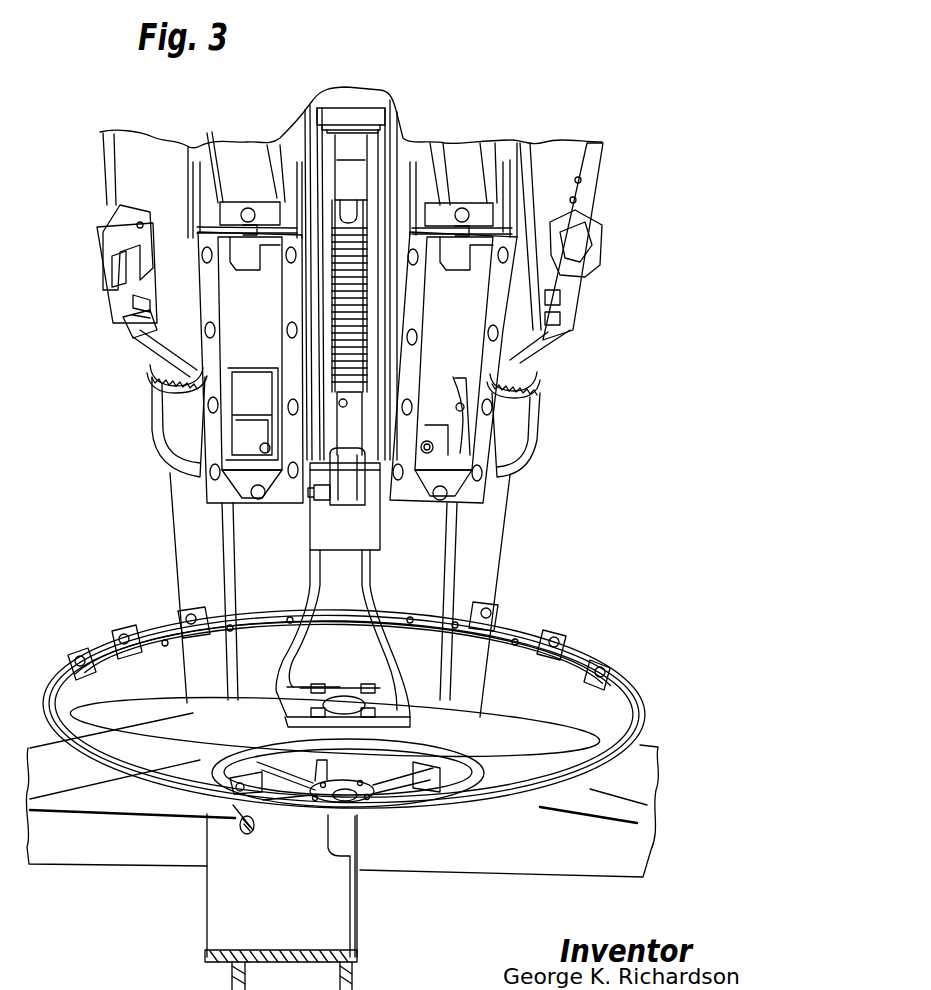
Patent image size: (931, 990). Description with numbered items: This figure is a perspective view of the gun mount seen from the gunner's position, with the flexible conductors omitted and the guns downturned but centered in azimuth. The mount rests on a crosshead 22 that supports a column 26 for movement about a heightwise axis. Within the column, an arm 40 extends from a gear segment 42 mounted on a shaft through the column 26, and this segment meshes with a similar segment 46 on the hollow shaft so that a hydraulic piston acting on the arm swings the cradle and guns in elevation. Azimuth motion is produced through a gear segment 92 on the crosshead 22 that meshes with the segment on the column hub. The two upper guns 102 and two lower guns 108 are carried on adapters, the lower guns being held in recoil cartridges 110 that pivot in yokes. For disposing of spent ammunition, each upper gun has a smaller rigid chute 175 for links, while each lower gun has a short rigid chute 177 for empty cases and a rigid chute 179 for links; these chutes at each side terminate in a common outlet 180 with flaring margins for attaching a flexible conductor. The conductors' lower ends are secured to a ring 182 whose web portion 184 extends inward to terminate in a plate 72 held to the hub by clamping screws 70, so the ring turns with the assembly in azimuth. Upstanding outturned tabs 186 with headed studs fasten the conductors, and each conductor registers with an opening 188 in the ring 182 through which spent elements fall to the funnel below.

The crosshead 22 is at (342, 851).
The column 26 is at (372, 569).
The arm 40 is at (367, 484).
The gear segment 42 is at (335, 360).
The gear segment 46 is at (330, 207).
The clamping screws 70 is at (366, 686).
The plate 72 is at (383, 700).
The gear segment 92 is at (402, 792).
The upper guns 102 is at (230, 585).
The lower guns 108 is at (180, 549).
The recoil cartridges 110 is at (162, 415).
The rigid chute 175 is at (247, 437).
The rigid chute 177 is at (357, 367).
The rigid chute 179 is at (250, 407).
The common outlet 180 is at (210, 392).
The ring 182 is at (643, 712).
The web portion 184 is at (335, 731).
The tabs 186 is at (80, 660).
The opening 188 is at (72, 705).